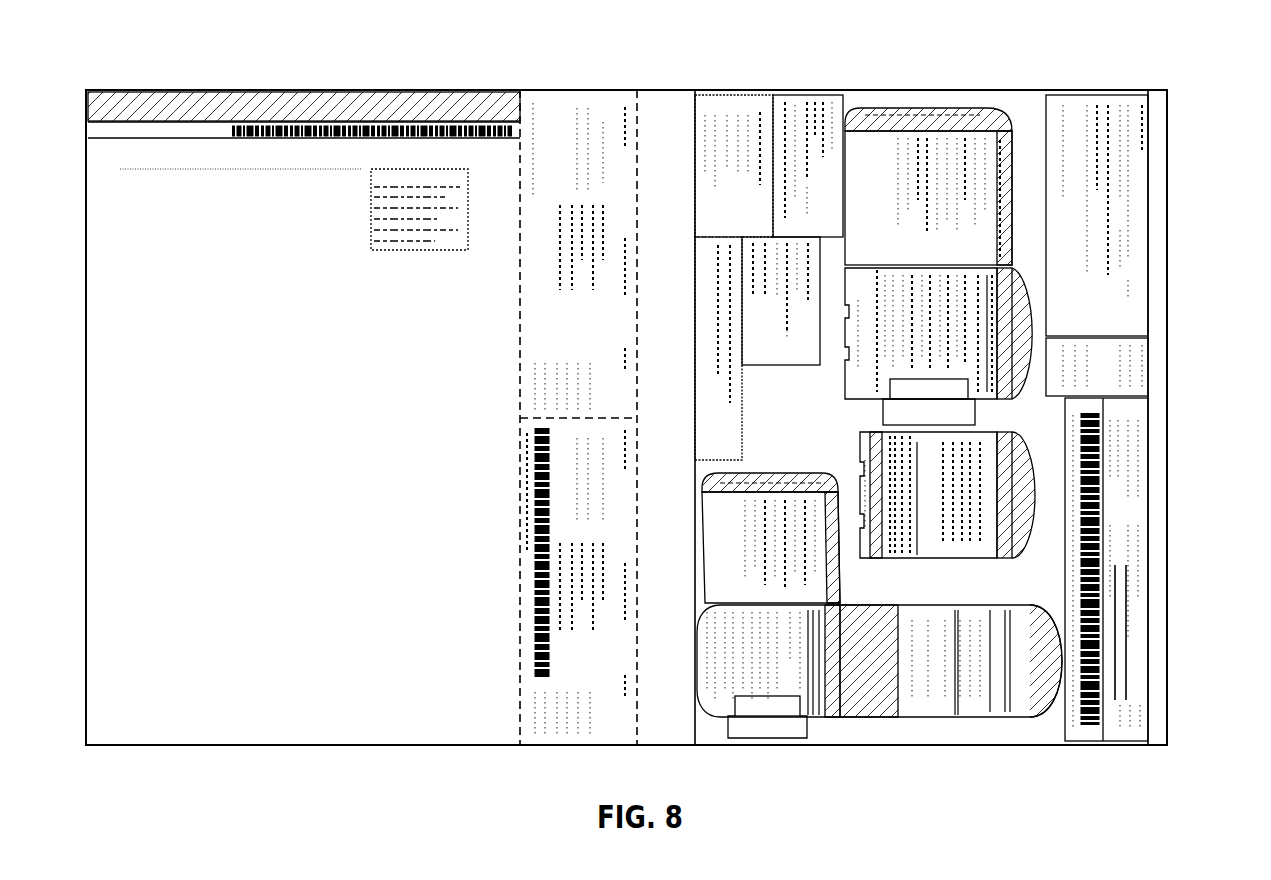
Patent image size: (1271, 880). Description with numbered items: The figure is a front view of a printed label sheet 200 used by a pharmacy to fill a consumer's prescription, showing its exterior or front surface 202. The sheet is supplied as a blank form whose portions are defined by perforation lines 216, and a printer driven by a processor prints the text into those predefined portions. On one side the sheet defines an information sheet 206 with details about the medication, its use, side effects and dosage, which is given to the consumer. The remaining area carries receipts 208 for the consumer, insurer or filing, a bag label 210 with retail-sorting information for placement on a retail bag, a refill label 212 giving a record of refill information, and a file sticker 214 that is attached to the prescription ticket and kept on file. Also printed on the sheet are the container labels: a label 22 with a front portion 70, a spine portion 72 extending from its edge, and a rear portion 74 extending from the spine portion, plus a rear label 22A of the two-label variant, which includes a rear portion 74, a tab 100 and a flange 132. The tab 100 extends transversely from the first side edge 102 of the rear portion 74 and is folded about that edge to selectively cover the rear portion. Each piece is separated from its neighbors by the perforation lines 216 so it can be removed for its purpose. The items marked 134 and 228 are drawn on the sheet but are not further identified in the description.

The label sheet 200 is at (189, 66).
The front surface 202 is at (242, 723).
The information sheet 206 is at (420, 727).
The receipts 208 is at (558, 103).
The bag label 210 is at (705, 103).
The refill label 212 is at (1085, 412).
The file sticker 214 is at (1073, 107).
The perforation lines 216 is at (847, 102).
The barcode 228 is at (1030, 475).
The tab 100 is at (931, 423).
The first side edge 102 is at (968, 267).
The rear label 22A is at (998, 118).
The rear portion 74 is at (1010, 278).
The indicia rectangle 134 is at (968, 392).
The flange 132 is at (955, 415).
The front portion 70 is at (1030, 503).
The spine portion 72 is at (907, 712).
The label 22 is at (879, 705).